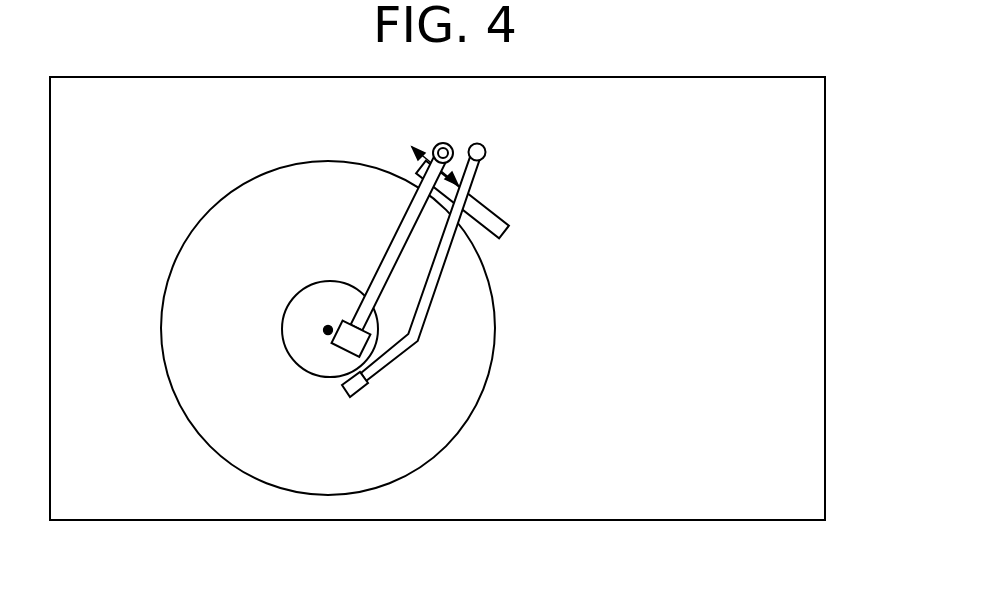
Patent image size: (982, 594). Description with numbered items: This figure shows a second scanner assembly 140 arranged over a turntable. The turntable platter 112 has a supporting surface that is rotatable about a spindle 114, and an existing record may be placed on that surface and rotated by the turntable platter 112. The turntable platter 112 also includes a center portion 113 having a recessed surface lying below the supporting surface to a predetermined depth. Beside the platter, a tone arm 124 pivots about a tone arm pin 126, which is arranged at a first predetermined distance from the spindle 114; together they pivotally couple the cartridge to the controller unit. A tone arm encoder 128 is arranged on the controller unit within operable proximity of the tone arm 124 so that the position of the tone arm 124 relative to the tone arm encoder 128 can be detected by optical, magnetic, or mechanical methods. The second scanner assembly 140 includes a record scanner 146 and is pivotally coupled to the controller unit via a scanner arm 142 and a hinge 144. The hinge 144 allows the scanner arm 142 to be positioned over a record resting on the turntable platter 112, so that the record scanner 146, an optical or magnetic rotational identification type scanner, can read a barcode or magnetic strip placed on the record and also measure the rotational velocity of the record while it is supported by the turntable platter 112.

The turntable platter 112 is at (237, 395).
The center portion 113 is at (297, 337).
The spindle 114 is at (326, 329).
The tone arm 124 is at (426, 308).
The tone arm pin 126 is at (482, 144).
The tone arm encoder 128 is at (509, 228).
The second scanner assembly 140 is at (387, 118).
The scanner arm 142 is at (392, 250).
The hinge 144 is at (443, 143).
The record scanner 146 is at (335, 318).